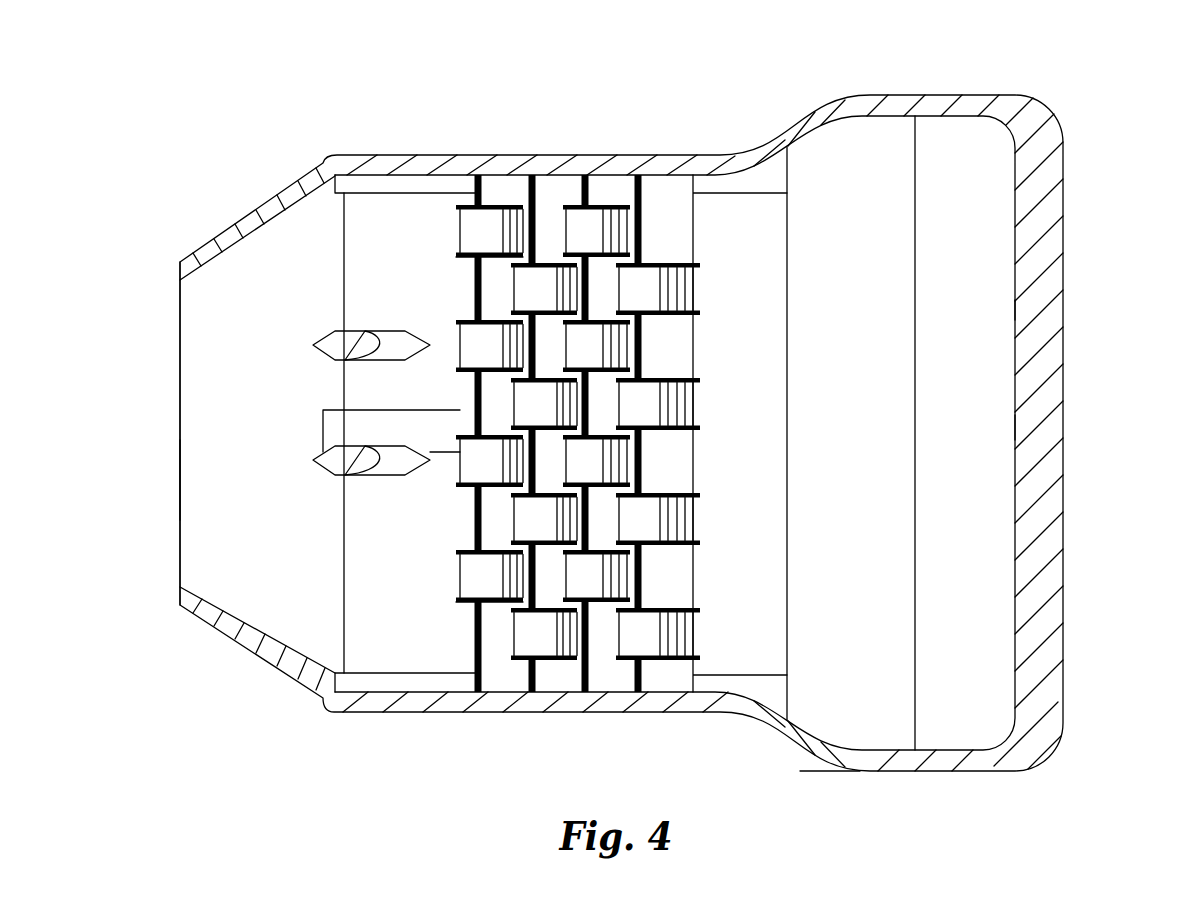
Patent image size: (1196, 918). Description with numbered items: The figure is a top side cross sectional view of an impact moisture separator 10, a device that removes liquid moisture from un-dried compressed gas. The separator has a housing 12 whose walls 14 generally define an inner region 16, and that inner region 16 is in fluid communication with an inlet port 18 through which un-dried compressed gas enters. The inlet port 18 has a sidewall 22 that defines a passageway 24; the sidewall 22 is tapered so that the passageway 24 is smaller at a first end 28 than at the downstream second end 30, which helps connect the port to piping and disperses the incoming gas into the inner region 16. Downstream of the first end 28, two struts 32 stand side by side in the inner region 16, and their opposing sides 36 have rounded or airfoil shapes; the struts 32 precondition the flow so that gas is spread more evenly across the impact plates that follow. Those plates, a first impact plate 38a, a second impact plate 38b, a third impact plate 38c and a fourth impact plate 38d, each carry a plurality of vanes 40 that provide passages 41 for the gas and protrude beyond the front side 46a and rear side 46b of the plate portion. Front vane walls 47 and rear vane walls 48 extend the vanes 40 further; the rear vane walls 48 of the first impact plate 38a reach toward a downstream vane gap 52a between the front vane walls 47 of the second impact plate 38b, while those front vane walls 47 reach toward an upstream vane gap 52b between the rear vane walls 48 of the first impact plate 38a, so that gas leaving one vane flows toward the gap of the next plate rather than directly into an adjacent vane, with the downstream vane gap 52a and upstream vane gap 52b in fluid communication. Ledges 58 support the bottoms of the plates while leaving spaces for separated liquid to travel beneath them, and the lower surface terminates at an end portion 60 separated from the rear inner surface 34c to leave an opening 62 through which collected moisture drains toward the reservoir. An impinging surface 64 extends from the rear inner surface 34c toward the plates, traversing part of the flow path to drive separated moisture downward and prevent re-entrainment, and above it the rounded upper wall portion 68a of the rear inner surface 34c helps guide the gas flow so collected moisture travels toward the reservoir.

The impact moisture separator 10 is at (1108, 126).
The housing 12 is at (1043, 192).
The walls 14 is at (825, 752).
The inner region 16 is at (377, 222).
The inlet port 18 is at (180, 488).
The sidewall 22 is at (218, 236).
The passageway 24 is at (216, 408).
The first end 28 is at (180, 362).
The second end 30 is at (343, 603).
The struts 32 is at (318, 345).
The rear inner surface 34c is at (1006, 425).
The opposing sides 36 is at (330, 333).
The first impact plate 38a is at (481, 190).
The second impact plate 38b is at (534, 178).
The third impact plate 38c is at (587, 180).
The fourth impact plate 38d is at (641, 182).
The vanes 40 is at (475, 240).
The passages 41 is at (467, 357).
The front side 46a is at (578, 195).
The rear side 46b is at (484, 680).
The front vane walls 47 is at (460, 262).
The rear vane walls 48 is at (480, 320).
The downstream vane gap 52a is at (500, 680).
The upstream vane gap 52b is at (495, 283).
The ledges 58 is at (357, 180).
The end portion 60 is at (787, 650).
The opening 62 is at (837, 478).
The impinging surface 64 is at (914, 702).
The upper wall portion 68a is at (985, 307).